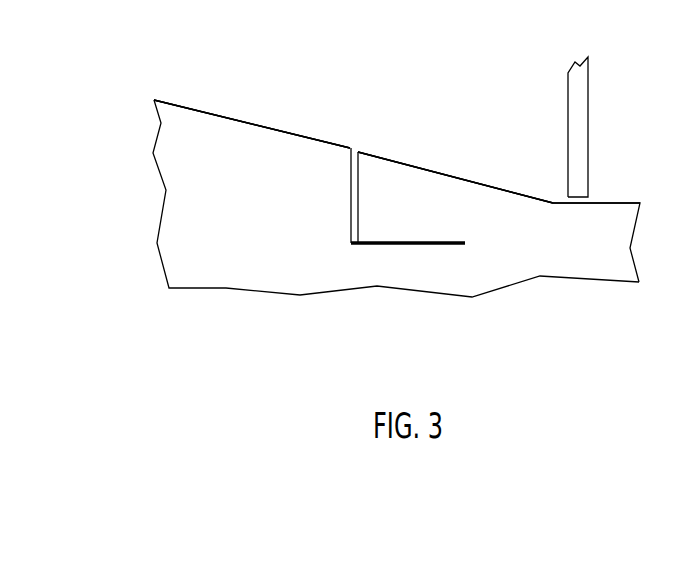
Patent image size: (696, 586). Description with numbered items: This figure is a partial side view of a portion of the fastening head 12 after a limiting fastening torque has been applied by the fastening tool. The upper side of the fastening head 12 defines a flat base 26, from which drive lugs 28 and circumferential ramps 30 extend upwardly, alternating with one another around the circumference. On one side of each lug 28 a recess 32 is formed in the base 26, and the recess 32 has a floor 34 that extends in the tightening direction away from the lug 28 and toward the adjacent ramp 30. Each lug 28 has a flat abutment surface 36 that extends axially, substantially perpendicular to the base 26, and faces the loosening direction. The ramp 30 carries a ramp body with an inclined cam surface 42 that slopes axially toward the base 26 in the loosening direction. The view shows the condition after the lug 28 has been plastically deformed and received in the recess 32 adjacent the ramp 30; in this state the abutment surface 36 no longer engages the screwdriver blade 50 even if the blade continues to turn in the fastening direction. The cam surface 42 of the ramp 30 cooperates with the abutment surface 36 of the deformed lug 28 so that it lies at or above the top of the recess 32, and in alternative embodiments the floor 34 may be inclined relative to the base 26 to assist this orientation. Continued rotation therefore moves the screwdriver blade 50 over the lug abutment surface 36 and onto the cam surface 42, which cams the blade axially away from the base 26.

The fastening head 12 is at (591, 266).
The flat base 26 is at (615, 172).
The drive lug 28 is at (382, 203).
The circumferential ramp 30 is at (180, 141).
The recess 32 is at (351, 178).
The recess floor 34 is at (408, 243).
The lug abutment surface 36 is at (465, 178).
The inclined cam surface 42 is at (243, 121).
The screwdriver blade 50 is at (588, 82).